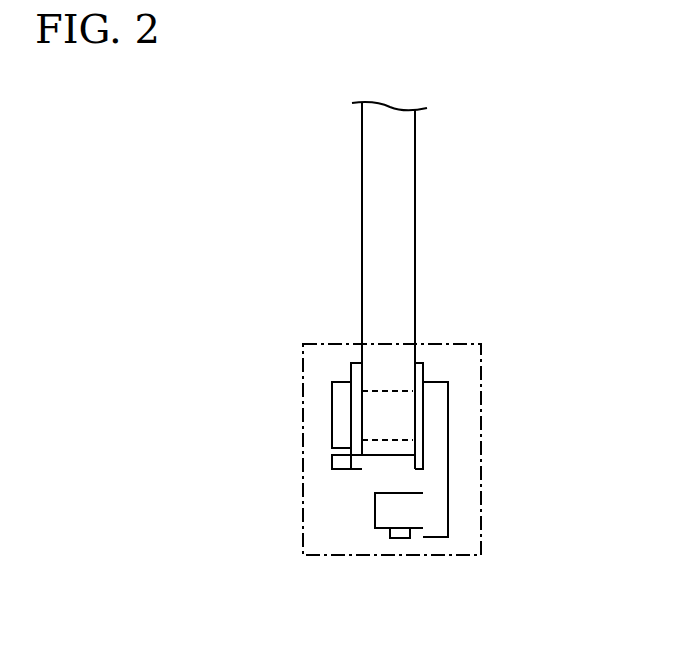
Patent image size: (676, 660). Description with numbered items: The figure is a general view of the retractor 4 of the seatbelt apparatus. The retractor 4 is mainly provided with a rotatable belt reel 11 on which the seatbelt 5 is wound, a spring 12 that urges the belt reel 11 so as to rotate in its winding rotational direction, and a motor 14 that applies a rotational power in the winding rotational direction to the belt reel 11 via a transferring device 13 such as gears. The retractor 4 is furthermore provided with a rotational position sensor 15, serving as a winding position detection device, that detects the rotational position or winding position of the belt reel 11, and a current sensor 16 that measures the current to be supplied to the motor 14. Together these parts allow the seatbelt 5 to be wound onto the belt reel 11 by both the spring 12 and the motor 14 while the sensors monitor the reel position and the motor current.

The retractor 4 is at (481, 407).
The seatbelt 5 is at (415, 186).
The belt reel 11 is at (423, 372).
The spring 12 is at (337, 408).
The transferring device 13 is at (443, 472).
The motor 14 is at (382, 510).
The rotational position sensor 15 is at (333, 460).
The current sensor 16 is at (403, 539).